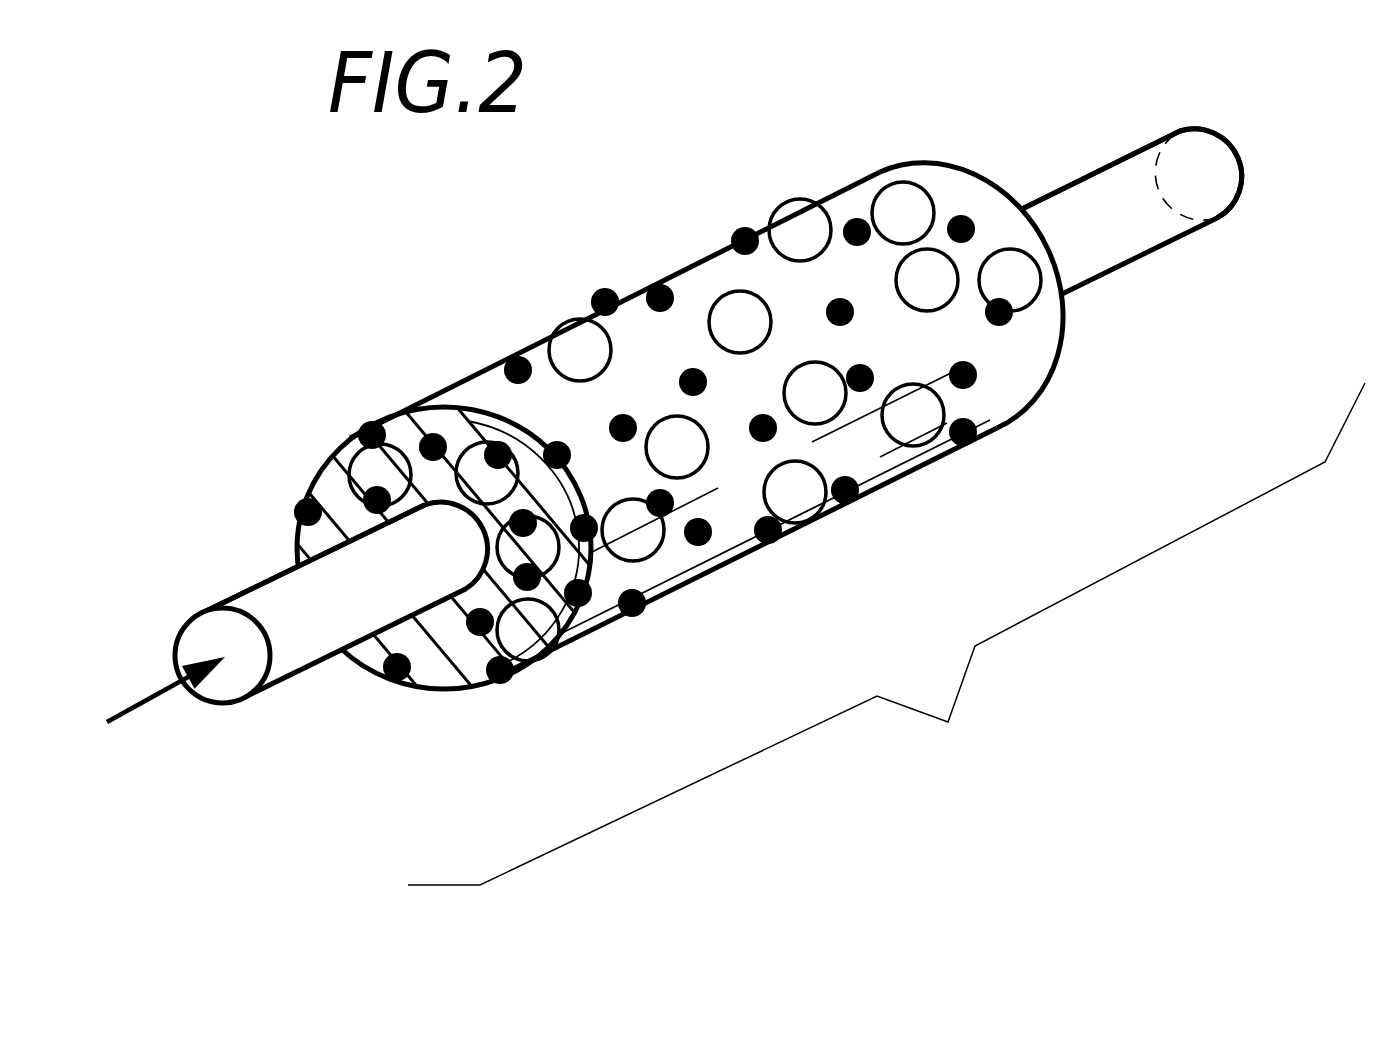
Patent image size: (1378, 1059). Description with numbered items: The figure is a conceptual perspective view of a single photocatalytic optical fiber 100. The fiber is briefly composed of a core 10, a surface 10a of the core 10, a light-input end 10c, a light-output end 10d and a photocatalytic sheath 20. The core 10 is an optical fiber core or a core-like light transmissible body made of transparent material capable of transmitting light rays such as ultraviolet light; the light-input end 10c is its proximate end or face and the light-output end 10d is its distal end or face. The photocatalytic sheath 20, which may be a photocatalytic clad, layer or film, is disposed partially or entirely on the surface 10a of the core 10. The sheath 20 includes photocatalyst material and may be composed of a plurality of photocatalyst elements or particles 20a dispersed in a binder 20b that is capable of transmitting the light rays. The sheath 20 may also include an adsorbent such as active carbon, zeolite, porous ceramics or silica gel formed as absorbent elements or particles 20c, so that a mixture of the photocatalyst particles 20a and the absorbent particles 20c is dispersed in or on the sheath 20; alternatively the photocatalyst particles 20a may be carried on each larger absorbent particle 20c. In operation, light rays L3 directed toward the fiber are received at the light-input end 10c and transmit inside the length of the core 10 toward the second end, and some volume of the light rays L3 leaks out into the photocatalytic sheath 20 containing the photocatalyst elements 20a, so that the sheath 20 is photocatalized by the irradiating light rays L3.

The core 10 is at (327, 684).
The surface of the core 10a is at (263, 606).
The light-input end 10c is at (202, 648).
The light-output end 10d is at (1247, 153).
The photocatalytic sheath 20 is at (721, 600).
The photocatalyst elements 20a is at (303, 498).
The binder 20b is at (455, 663).
The absorbent elements 20c is at (802, 230).
The photocatalytic optical fiber 100 is at (886, 634).
The light rays L3 is at (150, 707).